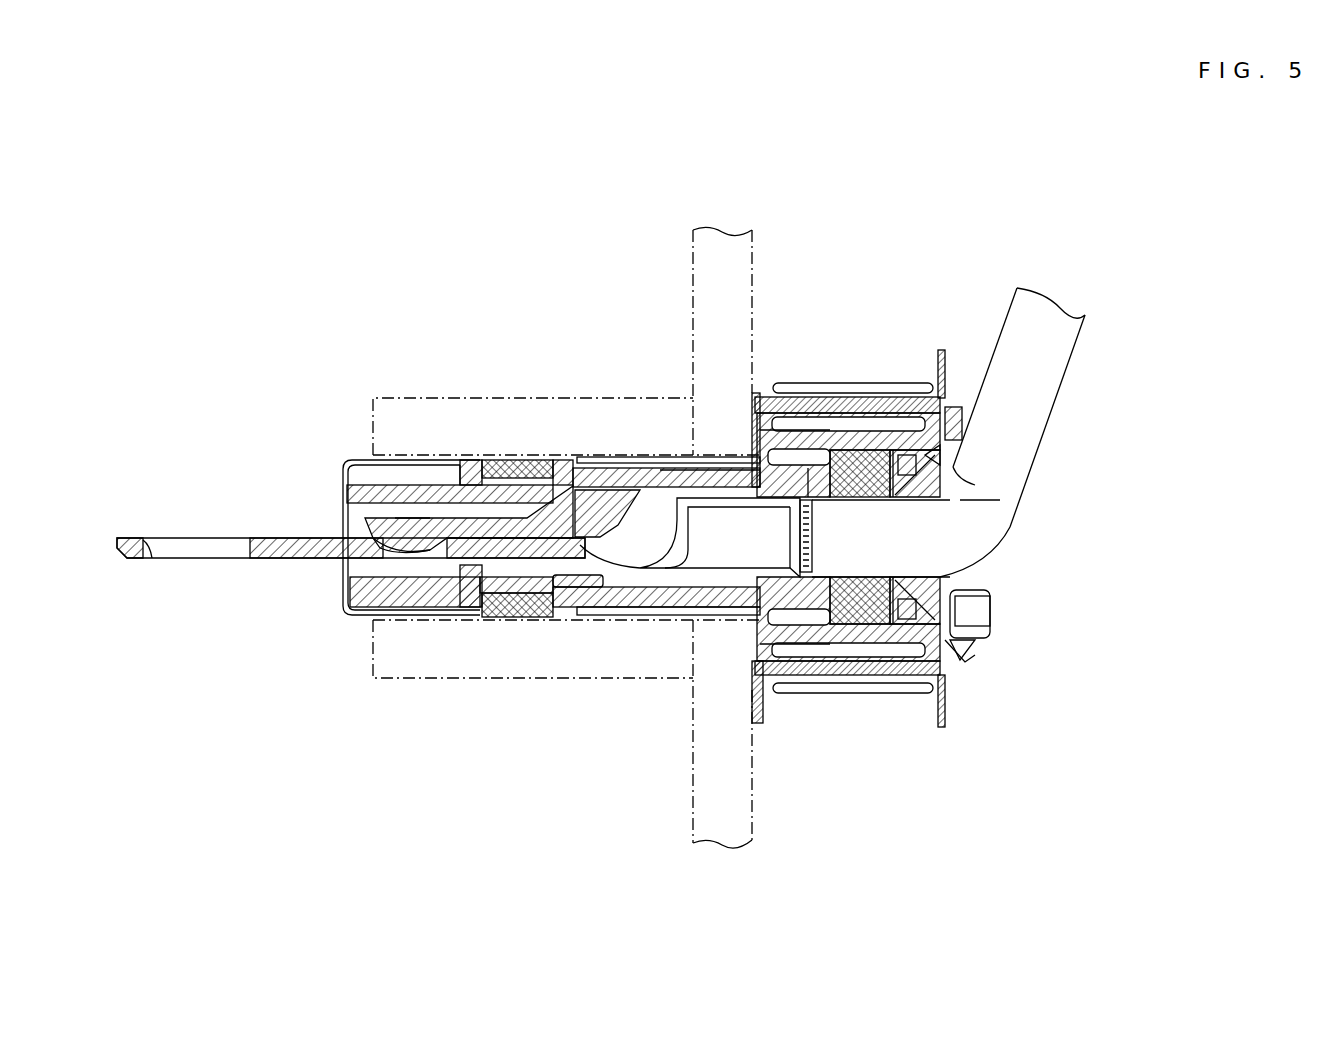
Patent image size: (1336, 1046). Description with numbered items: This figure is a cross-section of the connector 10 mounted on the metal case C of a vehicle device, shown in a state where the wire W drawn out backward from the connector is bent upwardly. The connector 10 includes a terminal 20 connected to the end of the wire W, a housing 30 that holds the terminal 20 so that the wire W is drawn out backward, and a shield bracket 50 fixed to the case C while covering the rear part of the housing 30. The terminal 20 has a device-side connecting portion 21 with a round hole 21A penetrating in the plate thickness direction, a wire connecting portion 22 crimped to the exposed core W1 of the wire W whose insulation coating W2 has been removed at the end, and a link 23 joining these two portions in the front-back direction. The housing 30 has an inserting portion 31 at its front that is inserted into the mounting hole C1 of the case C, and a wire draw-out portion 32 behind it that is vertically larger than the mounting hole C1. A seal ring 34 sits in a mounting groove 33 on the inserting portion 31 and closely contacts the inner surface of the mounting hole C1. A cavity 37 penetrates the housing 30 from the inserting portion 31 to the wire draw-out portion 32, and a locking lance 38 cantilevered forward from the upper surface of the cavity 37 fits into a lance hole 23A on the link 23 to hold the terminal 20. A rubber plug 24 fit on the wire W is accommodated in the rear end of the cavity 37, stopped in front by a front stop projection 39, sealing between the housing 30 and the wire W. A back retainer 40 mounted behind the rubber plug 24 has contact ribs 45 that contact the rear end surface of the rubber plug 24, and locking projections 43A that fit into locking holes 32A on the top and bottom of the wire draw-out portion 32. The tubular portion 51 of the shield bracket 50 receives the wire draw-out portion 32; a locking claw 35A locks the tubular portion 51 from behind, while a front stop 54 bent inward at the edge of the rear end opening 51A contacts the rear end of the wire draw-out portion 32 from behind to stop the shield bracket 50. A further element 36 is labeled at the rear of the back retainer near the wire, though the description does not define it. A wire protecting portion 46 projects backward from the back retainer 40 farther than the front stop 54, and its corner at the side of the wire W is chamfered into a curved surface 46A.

The connector 10 is at (752, 473).
The terminal 20 is at (351, 541).
The device-side connecting portion 21 is at (272, 536).
The round hole 21A is at (158, 562).
The wire connecting portion 22 is at (725, 547).
The link 23 is at (470, 556).
The lance hole 23A is at (380, 547).
The rubber plug 24 is at (860, 615).
The housing 30 is at (633, 622).
The inserting portion 31 is at (425, 592).
The wire draw-out portion 32 is at (838, 658).
The locking hole 32A is at (915, 440).
The mounting groove 33 is at (500, 602).
The seal ring 34 is at (505, 462).
The locking claw 35A is at (972, 650).
The nut 36 is at (985, 617).
The cavity 37 is at (635, 495).
The locking lance 38 is at (400, 540).
The front stop projection 39 is at (808, 475).
The back retainer 40 is at (970, 577).
The locking projection 43A is at (898, 440).
The contact rib 45 is at (882, 470).
The wire protecting portion 46 is at (960, 460).
The curved surface 46A is at (960, 468).
The shield bracket 50 is at (797, 678).
The tubular portion 51 is at (830, 420).
The rear end opening 51A is at (1018, 536).
The front stop 54 is at (925, 460).
The case C is at (753, 285).
The mounting hole C1 is at (662, 475).
The wire W is at (1102, 342).
The core W1 is at (790, 595).
The insulation coating W2 is at (1010, 497).